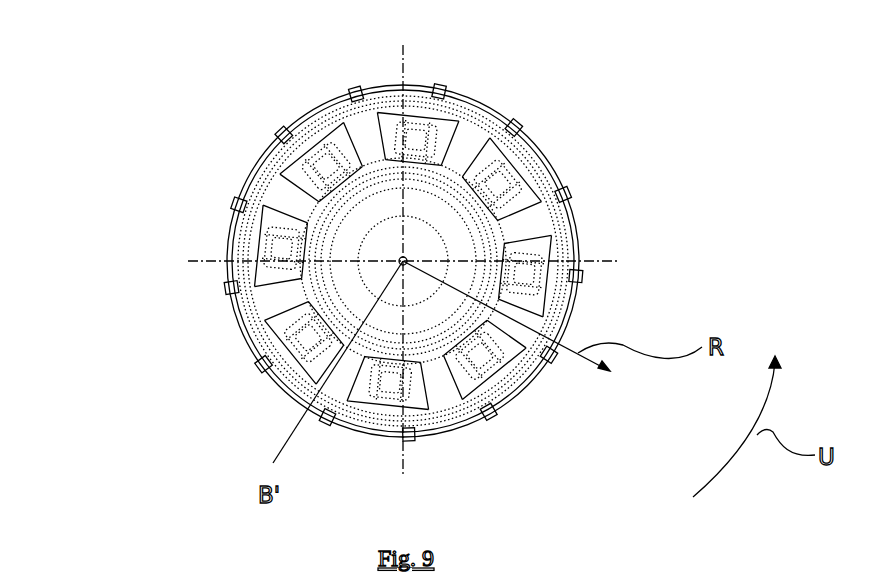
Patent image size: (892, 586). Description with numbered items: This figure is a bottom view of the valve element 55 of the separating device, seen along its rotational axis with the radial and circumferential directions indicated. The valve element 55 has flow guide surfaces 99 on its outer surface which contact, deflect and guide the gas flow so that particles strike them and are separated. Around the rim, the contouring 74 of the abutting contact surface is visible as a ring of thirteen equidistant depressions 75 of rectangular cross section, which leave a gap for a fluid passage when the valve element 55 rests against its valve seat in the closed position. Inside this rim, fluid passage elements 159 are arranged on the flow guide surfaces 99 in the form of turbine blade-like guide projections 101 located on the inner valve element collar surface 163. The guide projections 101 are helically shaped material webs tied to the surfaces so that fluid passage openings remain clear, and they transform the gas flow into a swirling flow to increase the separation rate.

The valve element 55 is at (642, 128).
The contouring 74 is at (266, 185).
The depressions 75 is at (398, 90).
The flow guide surfaces 99 is at (470, 138).
The guide projections 101 is at (305, 165).
The fluid passage elements 159 is at (280, 280).
The inner valve element collar surface 163 is at (262, 205).